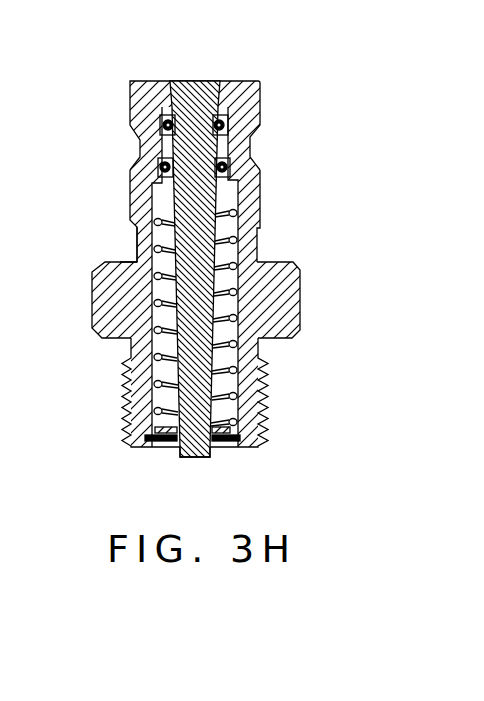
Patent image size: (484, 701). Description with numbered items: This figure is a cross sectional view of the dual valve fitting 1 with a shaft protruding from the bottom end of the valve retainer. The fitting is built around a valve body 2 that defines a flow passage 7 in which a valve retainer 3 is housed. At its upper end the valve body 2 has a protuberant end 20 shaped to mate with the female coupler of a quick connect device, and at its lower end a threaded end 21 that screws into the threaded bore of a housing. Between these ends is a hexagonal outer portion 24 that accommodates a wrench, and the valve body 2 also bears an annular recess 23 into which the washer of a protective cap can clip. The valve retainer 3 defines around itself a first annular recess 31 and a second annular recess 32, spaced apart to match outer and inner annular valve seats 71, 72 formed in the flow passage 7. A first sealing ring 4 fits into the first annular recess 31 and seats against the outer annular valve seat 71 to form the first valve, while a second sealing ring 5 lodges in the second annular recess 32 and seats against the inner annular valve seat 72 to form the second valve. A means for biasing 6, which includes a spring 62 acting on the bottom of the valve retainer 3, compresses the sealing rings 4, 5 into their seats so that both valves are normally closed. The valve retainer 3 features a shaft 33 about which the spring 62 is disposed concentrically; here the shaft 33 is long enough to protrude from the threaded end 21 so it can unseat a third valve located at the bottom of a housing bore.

The dual valve fitting 1 is at (261, 66).
The valve body 2 is at (128, 92).
The protuberant end 20 is at (131, 200).
The annular recess 23 is at (135, 245).
The hexagonal outer portion 24 is at (287, 296).
The threaded end 21 is at (268, 398).
The valve retainer 3 is at (256, 228).
The flow passage 7 is at (223, 352).
The shaft 33 is at (190, 433).
The first annular recess 31 is at (227, 121).
The second annular recess 32 is at (228, 166).
The outer annular valve seat 71 is at (167, 102).
The inner annular valve seat 72 is at (160, 145).
The first sealing ring 4 is at (253, 132).
The second sealing ring 5 is at (251, 173).
The spring 62 is at (163, 376).
The means for biasing 6 is at (157, 421).